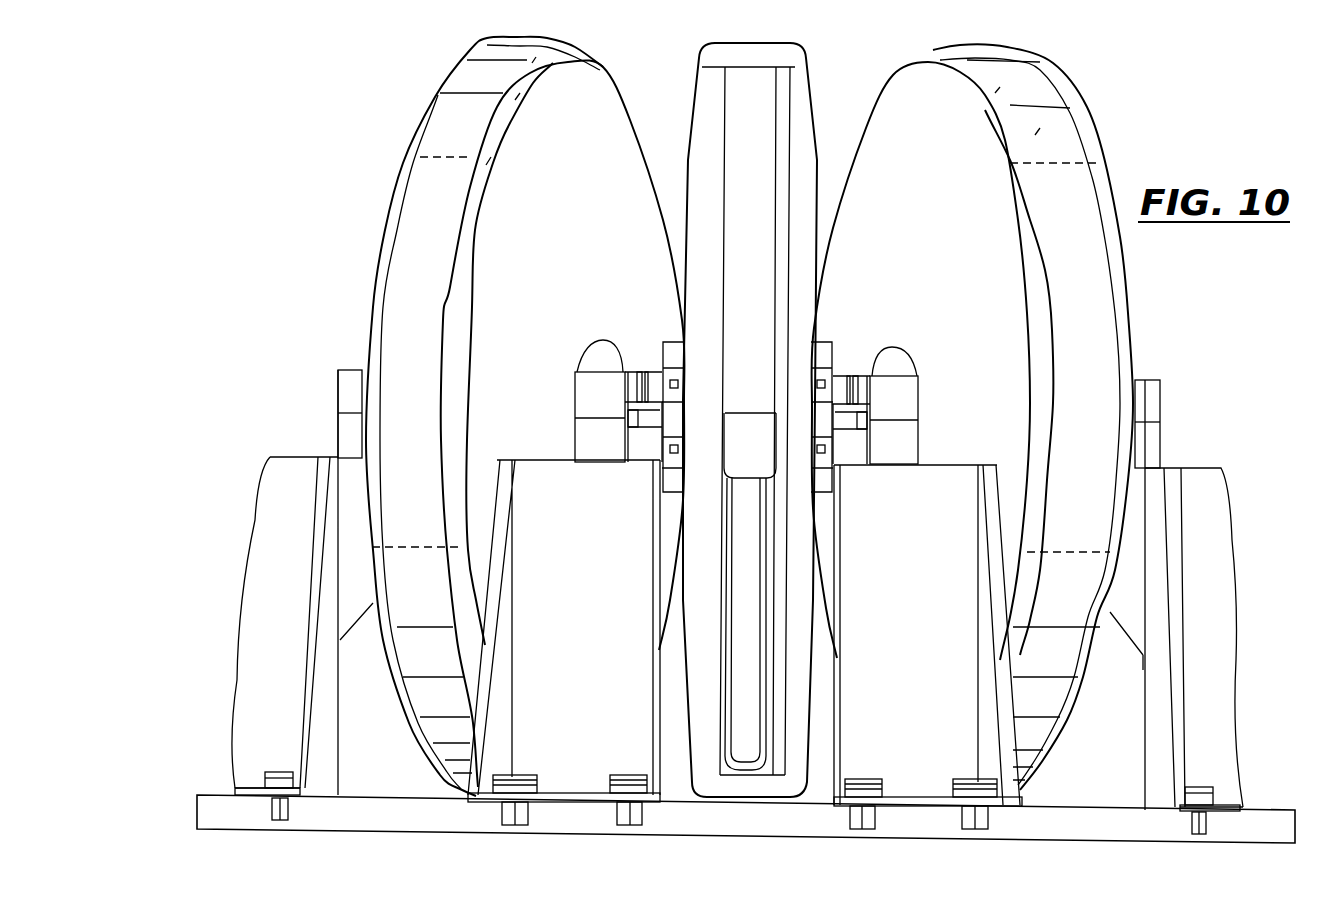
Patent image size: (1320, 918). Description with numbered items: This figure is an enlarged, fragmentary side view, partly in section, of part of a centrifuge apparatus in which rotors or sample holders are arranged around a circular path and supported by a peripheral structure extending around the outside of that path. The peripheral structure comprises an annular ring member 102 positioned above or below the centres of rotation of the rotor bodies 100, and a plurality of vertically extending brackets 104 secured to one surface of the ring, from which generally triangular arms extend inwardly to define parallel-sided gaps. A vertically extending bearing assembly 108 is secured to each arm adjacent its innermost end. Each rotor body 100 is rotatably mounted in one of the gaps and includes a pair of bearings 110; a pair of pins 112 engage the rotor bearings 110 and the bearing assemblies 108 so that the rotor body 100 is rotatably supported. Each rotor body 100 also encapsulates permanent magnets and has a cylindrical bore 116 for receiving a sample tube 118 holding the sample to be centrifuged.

The rotor body 100 is at (583, 55).
The annular ring member 102 is at (420, 815).
The bracket 104 is at (583, 748).
The bearing assembly 108 is at (578, 400).
The bearing 110 is at (662, 383).
The pin 112 is at (653, 418).
The cylindrical bore 116 is at (728, 92).
The sample tube 118 is at (745, 747).